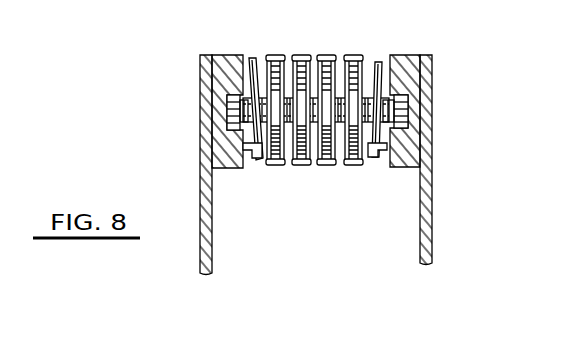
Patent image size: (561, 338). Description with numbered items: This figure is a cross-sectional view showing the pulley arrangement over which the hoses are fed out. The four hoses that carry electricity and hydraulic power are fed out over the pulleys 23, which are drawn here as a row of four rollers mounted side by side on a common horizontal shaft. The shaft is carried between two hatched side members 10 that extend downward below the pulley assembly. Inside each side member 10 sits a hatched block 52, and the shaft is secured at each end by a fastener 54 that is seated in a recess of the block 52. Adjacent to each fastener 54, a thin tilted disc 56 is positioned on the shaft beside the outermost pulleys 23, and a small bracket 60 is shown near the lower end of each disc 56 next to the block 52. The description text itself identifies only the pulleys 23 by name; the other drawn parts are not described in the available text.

The side plate 10 is at (199, 73).
The pulleys 23 is at (333, 58).
The mounting block 52 is at (402, 62).
The bolt 54 is at (227, 112).
The disc 56 is at (249, 67).
The bracket 60 is at (253, 153).